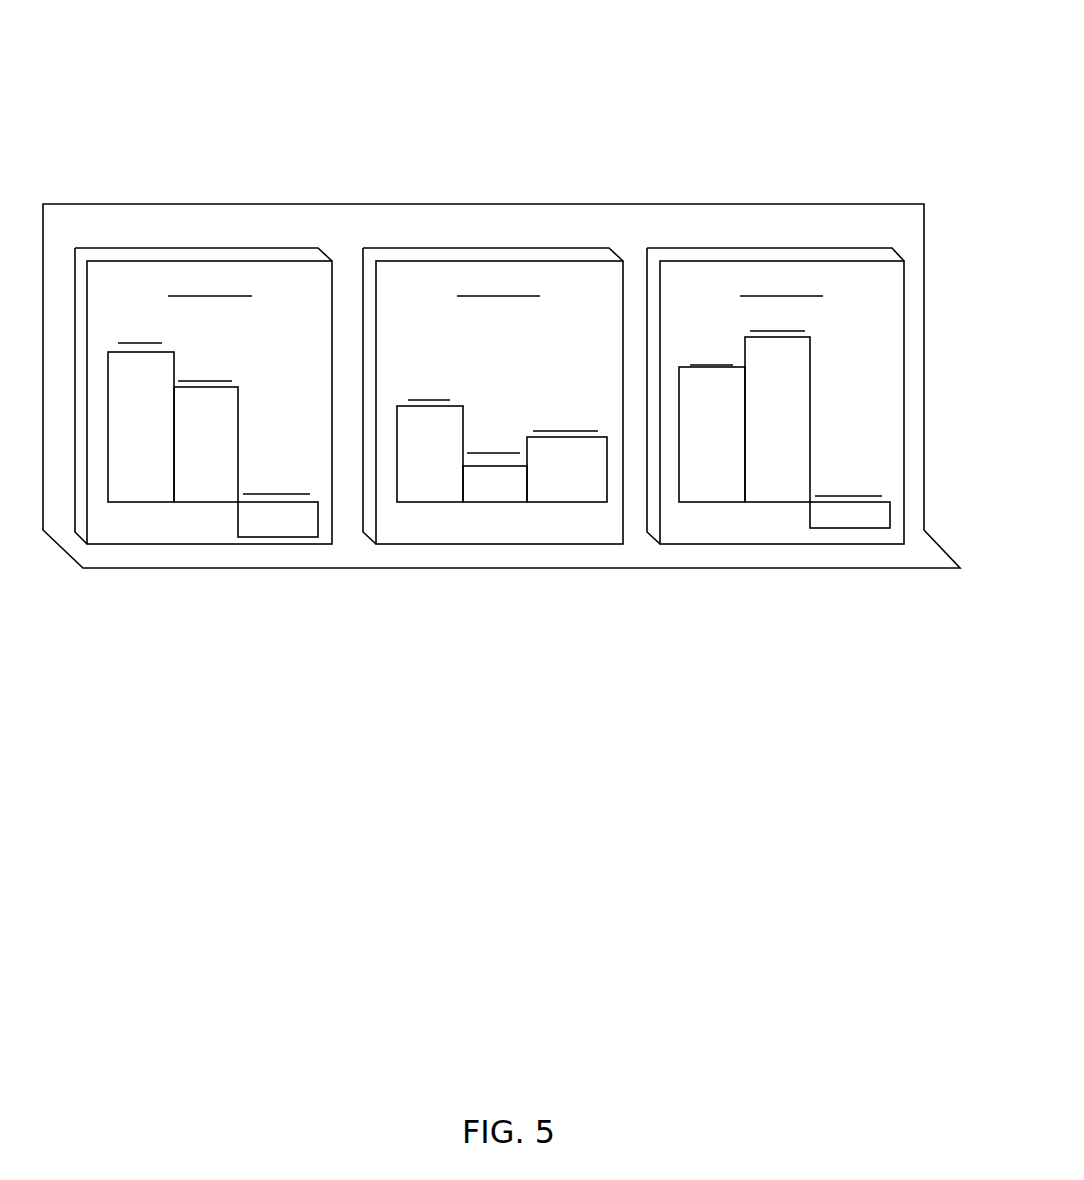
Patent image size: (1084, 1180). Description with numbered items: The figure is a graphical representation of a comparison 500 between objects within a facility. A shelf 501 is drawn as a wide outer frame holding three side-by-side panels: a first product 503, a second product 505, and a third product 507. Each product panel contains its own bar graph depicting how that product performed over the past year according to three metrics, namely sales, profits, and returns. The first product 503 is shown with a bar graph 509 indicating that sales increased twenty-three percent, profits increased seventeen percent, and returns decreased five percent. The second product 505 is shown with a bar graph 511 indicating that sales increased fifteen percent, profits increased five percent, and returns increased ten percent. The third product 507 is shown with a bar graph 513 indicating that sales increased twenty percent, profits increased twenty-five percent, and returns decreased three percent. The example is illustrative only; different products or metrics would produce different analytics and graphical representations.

The comparison 500 is at (345, 58).
The shelf 501 is at (630, 205).
The first product 503 is at (188, 248).
The second product 505 is at (478, 248).
The third product 507 is at (778, 248).
The bar graph 509 is at (195, 513).
The bar graph 511 is at (488, 515).
The bar graph 513 is at (769, 515).